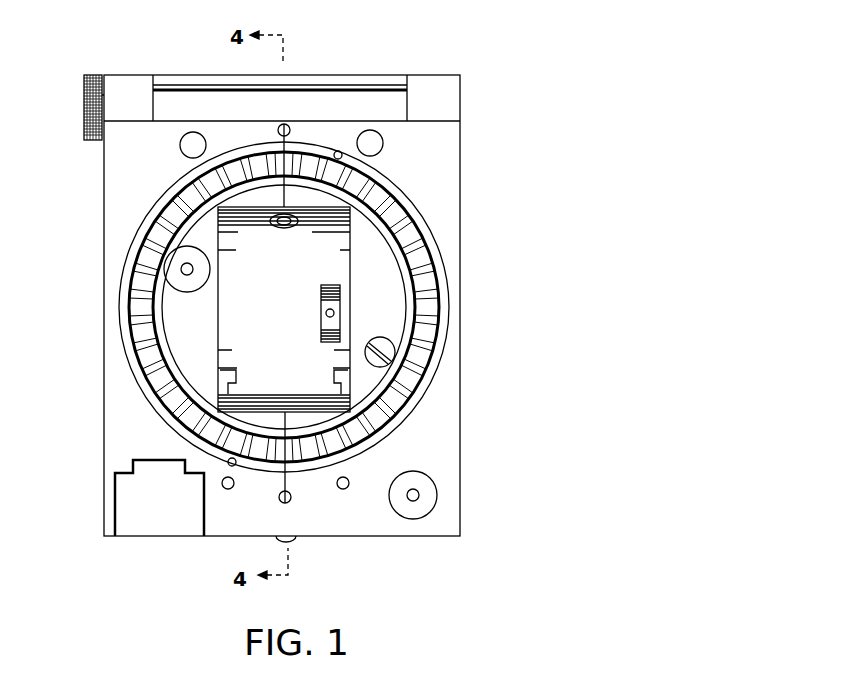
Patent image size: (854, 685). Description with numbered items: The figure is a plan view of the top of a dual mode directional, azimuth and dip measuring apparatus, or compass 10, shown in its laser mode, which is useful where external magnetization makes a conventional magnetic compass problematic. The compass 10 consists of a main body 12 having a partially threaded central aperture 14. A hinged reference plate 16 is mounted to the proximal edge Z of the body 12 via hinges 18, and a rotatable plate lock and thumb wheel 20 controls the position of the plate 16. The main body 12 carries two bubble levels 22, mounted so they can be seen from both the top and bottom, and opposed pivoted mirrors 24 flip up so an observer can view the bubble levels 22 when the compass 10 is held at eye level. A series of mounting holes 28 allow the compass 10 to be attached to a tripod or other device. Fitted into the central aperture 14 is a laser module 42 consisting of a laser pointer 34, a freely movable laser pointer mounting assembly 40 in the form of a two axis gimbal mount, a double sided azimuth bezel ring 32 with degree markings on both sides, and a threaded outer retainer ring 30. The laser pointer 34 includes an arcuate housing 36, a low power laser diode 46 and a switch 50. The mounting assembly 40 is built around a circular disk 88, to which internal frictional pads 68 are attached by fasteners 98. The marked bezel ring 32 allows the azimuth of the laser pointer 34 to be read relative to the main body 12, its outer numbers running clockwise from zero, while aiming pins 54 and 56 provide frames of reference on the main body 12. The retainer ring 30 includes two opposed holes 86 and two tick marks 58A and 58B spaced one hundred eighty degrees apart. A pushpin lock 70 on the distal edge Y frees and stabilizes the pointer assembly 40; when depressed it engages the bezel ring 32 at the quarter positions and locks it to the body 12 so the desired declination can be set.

The compass 10 is at (473, 99).
The main body 12 is at (462, 390).
The central aperture 14 is at (440, 257).
The hinged reference plate 16 is at (322, 75).
The hinges 18 is at (140, 75).
The rotatable plate lock and thumb wheel 20 is at (97, 75).
The bubble levels 22 is at (432, 505).
The pivoted mirrors 24 is at (135, 528).
The mounting holes 28 is at (184, 152).
The threaded outer retainer ring 30 is at (420, 393).
The azimuth bezel ring 32 is at (128, 300).
The laser pointer 34 is at (360, 245).
The arcuate housing 36 is at (400, 385).
The laser pointer mounting assembly 40 is at (397, 317).
The laser module 42 is at (292, 324).
The laser diode 46 is at (290, 228).
The switch 50 is at (321, 300).
The aiming pin 54 is at (291, 128).
The aiming pin 56 is at (298, 541).
The tick mark 58A is at (282, 152).
The tick mark 58B is at (292, 500).
The internal frictional pads 68 is at (200, 292).
The pushpin lock 70 is at (283, 541).
The opposed holes 86 is at (339, 151).
The circular disk 88 is at (209, 379).
The fasteners 98 is at (370, 337).
The proximal edge Z is at (410, 75).
The distal edge Y is at (400, 537).